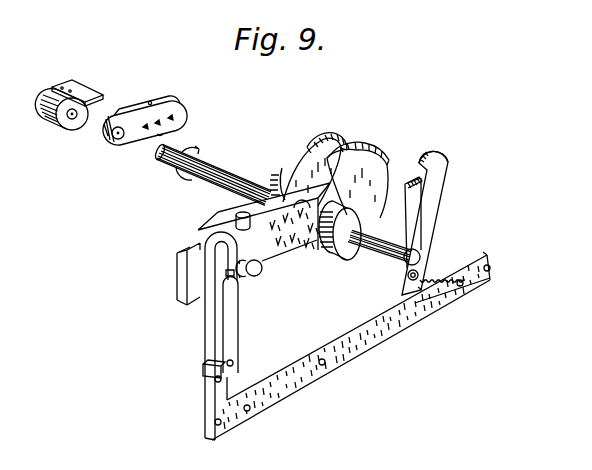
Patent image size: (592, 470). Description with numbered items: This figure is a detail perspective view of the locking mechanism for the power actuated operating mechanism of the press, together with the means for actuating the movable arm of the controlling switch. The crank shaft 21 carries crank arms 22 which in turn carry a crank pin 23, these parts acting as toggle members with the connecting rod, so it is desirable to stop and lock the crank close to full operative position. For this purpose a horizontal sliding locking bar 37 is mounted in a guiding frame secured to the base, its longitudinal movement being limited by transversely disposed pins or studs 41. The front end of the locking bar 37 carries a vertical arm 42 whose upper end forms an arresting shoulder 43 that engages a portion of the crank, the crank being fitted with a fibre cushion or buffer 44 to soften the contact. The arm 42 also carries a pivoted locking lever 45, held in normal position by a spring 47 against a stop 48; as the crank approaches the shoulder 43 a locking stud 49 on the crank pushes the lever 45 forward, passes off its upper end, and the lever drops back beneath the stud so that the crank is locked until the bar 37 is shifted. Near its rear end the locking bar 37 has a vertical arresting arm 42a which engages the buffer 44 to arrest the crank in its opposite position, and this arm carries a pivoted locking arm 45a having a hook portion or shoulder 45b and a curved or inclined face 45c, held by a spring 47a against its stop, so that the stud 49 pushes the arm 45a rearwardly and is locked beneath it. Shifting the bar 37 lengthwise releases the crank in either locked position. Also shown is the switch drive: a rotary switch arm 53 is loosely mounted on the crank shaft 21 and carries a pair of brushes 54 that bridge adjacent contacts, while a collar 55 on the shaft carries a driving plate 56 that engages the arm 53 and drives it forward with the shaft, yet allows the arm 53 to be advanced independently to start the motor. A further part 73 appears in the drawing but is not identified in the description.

The crank shaft 21 is at (212, 167).
The crank arms 22 is at (376, 160).
The crank pin 23 is at (256, 277).
The horizontal sliding locking bar 37 is at (313, 360).
The pins or studs 41 is at (247, 411).
The vertical arm 42 is at (215, 315).
The vertical arresting arm 42a is at (411, 193).
The arresting shoulder 43 is at (222, 232).
The cushion or buffer 44 is at (243, 253).
The pivoted locking lever 45 is at (233, 328).
The pivoted locking arm 45a is at (428, 212).
The hook portion or shoulder 45b is at (428, 157).
The curved or inclined face 45c is at (421, 157).
The spring 47 is at (215, 385).
The spring 47a is at (423, 273).
The stop 48 is at (222, 378).
The locking stud 49 is at (230, 273).
The rotary switch arm 53 is at (132, 113).
The brushes 54 is at (160, 135).
The collar 55 is at (50, 113).
The driving plate 56 is at (81, 90).
The stud 73 is at (151, 102).